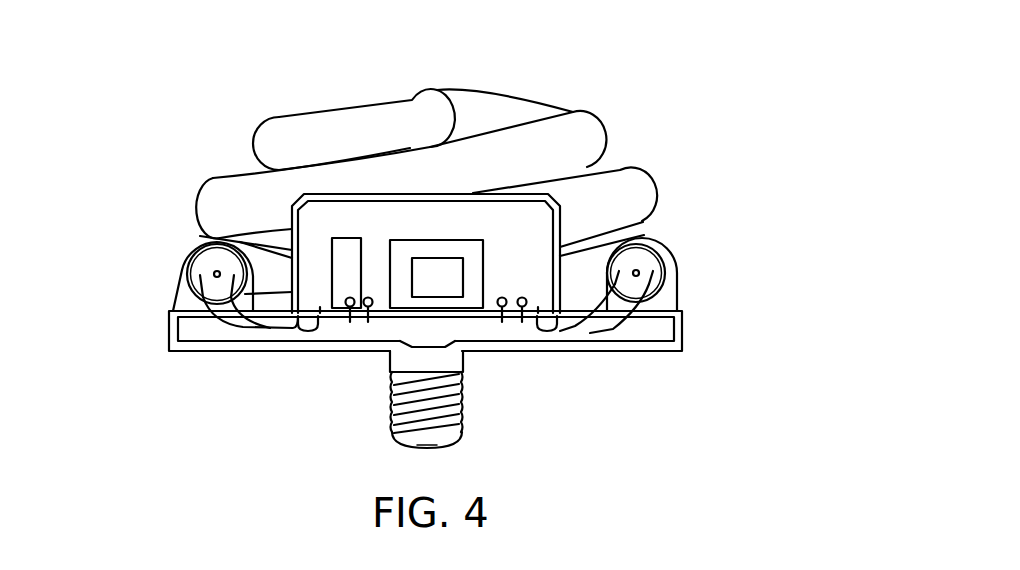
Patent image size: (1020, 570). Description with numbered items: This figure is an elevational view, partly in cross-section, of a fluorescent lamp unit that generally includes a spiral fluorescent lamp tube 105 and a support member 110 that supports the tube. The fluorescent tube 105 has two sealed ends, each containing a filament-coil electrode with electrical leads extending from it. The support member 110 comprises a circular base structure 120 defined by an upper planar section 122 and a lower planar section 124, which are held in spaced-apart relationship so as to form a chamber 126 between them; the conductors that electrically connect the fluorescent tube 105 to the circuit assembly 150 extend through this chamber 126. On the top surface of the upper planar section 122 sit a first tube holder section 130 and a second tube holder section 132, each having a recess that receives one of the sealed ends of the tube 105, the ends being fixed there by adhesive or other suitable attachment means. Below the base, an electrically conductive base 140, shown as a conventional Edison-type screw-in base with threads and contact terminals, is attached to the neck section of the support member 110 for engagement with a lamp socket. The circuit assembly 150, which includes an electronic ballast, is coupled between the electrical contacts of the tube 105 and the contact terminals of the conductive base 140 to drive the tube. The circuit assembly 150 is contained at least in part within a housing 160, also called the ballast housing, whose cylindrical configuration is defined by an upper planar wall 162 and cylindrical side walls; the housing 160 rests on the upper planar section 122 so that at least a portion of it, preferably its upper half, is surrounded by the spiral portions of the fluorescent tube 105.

The fluorescent lamp tube 105 is at (500, 110).
The support member 110 is at (262, 330).
The circular base structure 120 is at (683, 335).
The upper planar section 122 is at (173, 342).
The lower planar section 124 is at (309, 336).
The chamber 126 is at (378, 333).
The first tube holder section 130 is at (197, 263).
The second tube holder section 132 is at (662, 262).
The electrically conductive base 140 is at (463, 392).
The circuit assembly 150 is at (437, 268).
The ballast housing 160 is at (632, 173).
The upper planar wall 162 is at (407, 193).